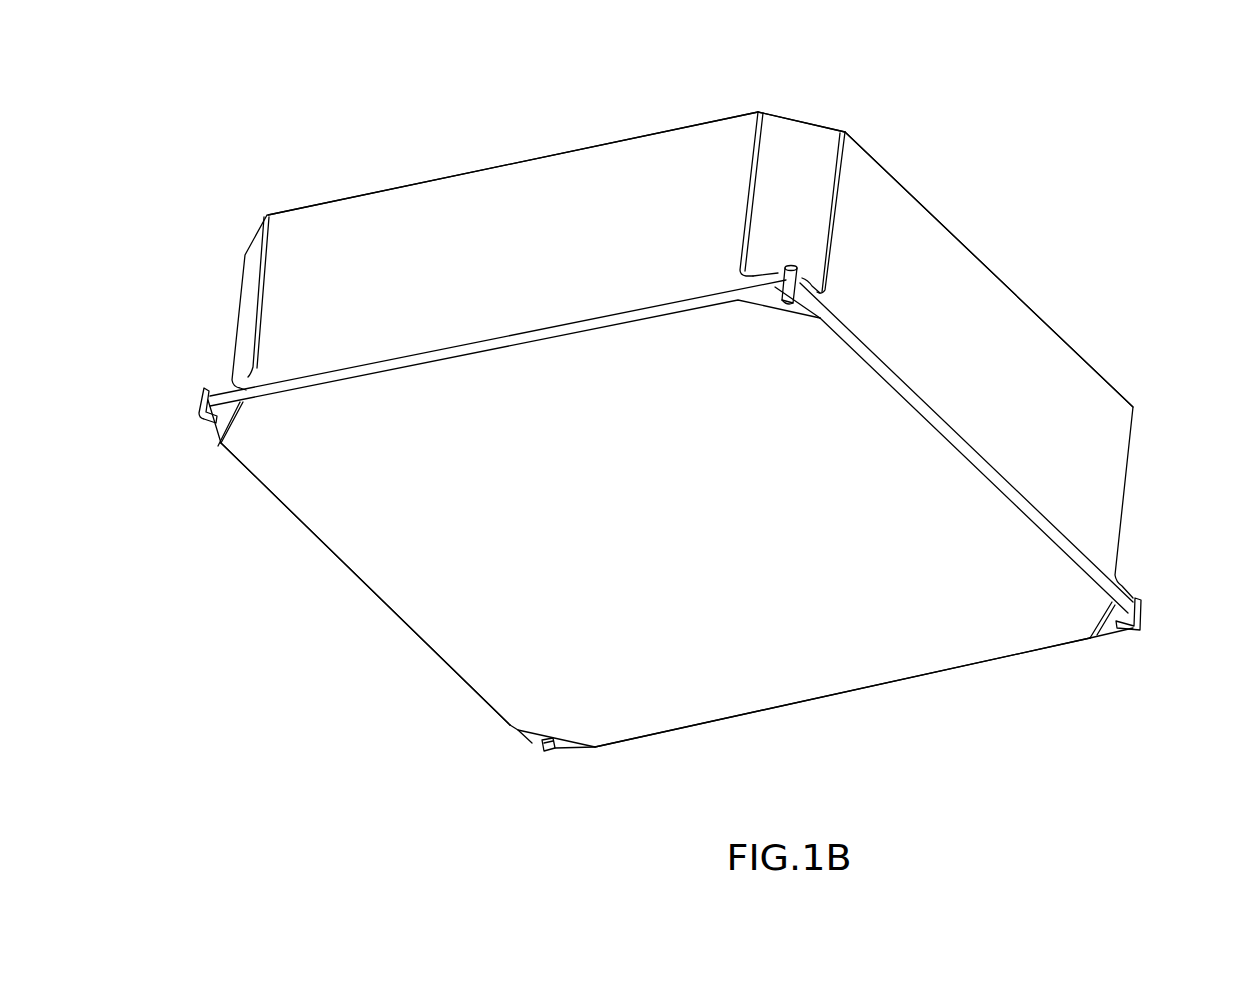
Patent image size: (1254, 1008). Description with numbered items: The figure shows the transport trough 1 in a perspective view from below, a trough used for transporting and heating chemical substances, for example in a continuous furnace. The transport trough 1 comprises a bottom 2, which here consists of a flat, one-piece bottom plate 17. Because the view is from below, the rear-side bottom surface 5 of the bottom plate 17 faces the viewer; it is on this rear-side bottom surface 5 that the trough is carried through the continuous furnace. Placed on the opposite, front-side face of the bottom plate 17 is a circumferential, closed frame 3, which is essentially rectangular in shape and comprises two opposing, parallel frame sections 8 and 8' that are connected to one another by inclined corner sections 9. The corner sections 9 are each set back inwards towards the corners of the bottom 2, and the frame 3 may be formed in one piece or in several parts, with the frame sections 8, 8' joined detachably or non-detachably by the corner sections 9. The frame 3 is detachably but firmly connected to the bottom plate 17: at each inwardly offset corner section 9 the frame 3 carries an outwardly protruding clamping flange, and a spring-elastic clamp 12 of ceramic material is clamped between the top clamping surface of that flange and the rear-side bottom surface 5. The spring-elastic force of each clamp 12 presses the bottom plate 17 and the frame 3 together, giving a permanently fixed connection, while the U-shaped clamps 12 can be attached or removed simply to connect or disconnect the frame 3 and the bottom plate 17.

The transport trough 1 is at (355, 162).
The bottom 2 is at (369, 596).
The frame 3 is at (583, 180).
The rear-side bottom surface 5 is at (483, 682).
The frame section 8 is at (359, 238).
The frame section 8' is at (989, 365).
The corner section 9 is at (247, 270).
The spring-elastic clamp 12 is at (200, 400).
The bottom plate 17 is at (257, 485).